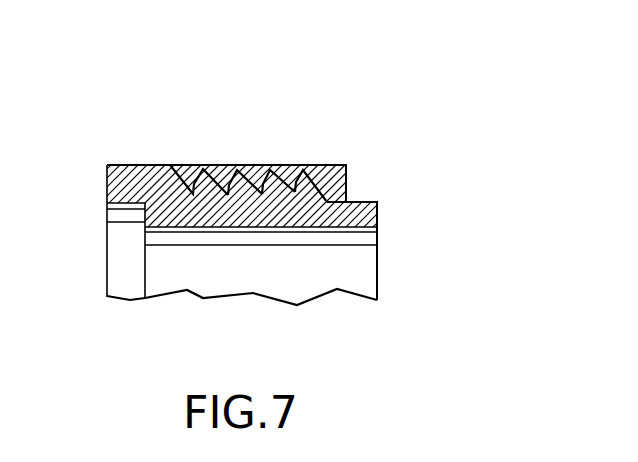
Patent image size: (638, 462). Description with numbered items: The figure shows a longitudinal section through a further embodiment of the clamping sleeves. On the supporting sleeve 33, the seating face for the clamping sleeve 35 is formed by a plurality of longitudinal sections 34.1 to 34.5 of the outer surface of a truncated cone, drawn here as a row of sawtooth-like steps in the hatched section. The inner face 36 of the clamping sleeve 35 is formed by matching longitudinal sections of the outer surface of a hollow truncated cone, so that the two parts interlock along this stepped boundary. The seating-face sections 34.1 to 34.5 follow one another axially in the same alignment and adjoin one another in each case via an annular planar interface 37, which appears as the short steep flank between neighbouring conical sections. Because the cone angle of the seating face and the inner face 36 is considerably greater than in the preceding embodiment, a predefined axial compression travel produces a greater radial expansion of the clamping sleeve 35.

The supporting sleeve 33 is at (380, 208).
The seating-face section 34.1 is at (182, 188).
The seating-face section 34.5 is at (308, 192).
The clamping sleeve 35 is at (282, 176).
The inner face 36 is at (212, 196).
The annular planar interface 37 is at (278, 195).